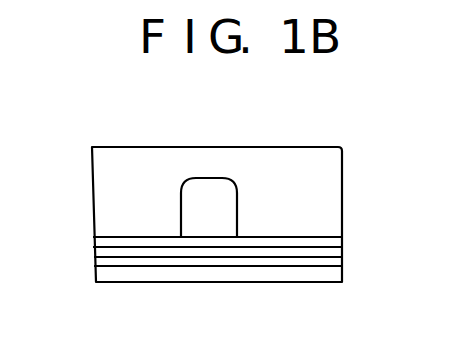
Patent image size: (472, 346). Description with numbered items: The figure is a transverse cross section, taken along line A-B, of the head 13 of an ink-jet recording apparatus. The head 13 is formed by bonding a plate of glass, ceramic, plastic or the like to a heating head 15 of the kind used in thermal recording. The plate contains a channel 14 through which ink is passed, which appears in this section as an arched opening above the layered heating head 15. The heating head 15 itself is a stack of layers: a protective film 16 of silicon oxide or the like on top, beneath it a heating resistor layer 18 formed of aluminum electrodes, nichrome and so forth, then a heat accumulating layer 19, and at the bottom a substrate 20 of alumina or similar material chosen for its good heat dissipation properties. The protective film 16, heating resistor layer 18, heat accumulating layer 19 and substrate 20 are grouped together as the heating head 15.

The head 13 is at (104, 147).
The channel 14 is at (224, 178).
The heating head 15 is at (355, 235).
The protective film 16 is at (273, 237).
The heating resistor layer 18 is at (296, 252).
The heat accumulating layer 19 is at (321, 260).
The substrate 20 is at (298, 274).